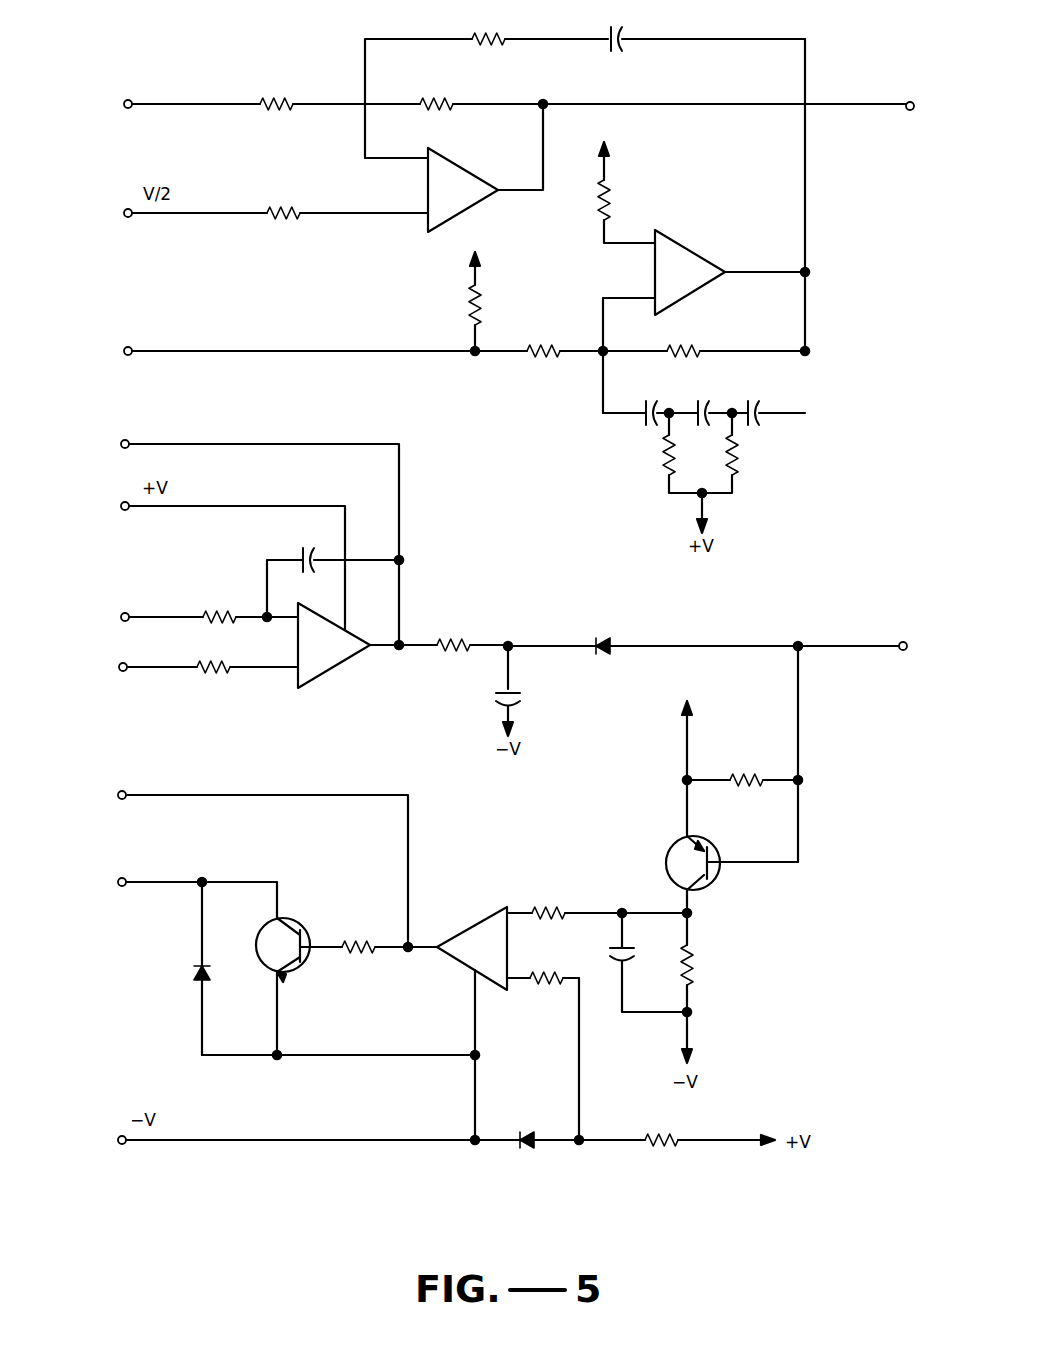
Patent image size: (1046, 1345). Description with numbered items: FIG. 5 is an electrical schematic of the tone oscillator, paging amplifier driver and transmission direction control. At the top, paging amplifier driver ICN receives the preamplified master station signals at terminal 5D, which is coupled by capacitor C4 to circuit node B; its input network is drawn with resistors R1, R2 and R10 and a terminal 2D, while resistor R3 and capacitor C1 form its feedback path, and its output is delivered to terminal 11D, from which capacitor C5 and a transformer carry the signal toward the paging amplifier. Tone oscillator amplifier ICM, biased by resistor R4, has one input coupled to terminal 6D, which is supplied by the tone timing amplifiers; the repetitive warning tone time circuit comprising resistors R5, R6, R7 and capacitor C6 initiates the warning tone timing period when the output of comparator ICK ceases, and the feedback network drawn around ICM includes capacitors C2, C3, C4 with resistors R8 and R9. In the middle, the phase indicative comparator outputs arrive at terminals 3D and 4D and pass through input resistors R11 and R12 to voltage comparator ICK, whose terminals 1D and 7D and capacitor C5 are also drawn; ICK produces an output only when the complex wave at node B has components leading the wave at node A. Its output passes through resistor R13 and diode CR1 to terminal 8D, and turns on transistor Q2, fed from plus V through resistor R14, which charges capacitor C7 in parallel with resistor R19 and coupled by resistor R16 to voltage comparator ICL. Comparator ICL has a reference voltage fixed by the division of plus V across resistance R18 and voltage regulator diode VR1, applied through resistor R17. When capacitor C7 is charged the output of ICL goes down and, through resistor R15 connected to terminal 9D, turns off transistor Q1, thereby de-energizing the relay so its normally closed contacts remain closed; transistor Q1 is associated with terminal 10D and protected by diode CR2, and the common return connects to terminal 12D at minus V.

The resistor R1 is at (340, 93).
The resistor R2 is at (347, 201).
The resistor R3 is at (540, 27).
The resistor R4 is at (622, 180).
The resistor R5 is at (485, 289).
The resistor R6 is at (565, 340).
The resistor R7 is at (704, 340).
The resistor R8 is at (664, 453).
The resistor R9 is at (735, 453).
The resistor R10 is at (480, 93).
The input resistor R11 is at (249, 605).
The input resistor R12 is at (247, 655).
The resistor R13 is at (472, 632).
The resistor R14 is at (735, 731).
The resistor R15 is at (387, 933).
The resistor R16 is at (597, 900).
The resistor R17 is at (543, 1043).
The resistance R18 is at (677, 1127).
The resistor R19 is at (707, 988).
The capacitor C1 is at (705, 30).
The capacitor C2 is at (636, 399).
The capacitor C3 is at (700, 399).
The capacitor C4 is at (768, 399).
The capacitor C5 is at (333, 570).
The capacitor C6 is at (523, 691).
The capacitor C7 is at (648, 962).
The paging amplifier driver ICN is at (485, 168).
The tone oscillator amplifier ICM is at (704, 321).
The voltage comparator ICK is at (367, 645).
The voltage comparator ICL is at (472, 1023).
The transistor Q1 is at (284, 985).
The transistor Q2 is at (708, 846).
The diode CR1 is at (653, 634).
The diode CR2 is at (174, 968).
The voltage regulator diode VR1 is at (543, 1126).
The terminal 1D is at (218, 562).
The terminal 2D is at (177, 213).
The terminal 3D is at (145, 617).
The terminal 4D is at (141, 667).
The terminal 5D is at (174, 104).
The terminal 6D is at (307, 351).
The terminal 7D is at (243, 538).
The terminal 8D is at (869, 646).
The terminal 9D is at (246, 865).
The terminal 10D is at (176, 894).
The terminal 11D is at (933, 106).
The terminal 12D is at (298, 1140).